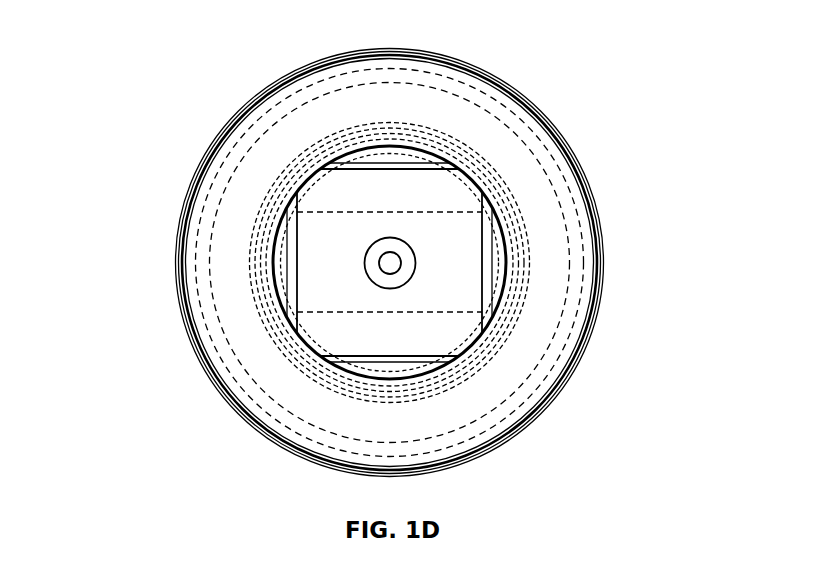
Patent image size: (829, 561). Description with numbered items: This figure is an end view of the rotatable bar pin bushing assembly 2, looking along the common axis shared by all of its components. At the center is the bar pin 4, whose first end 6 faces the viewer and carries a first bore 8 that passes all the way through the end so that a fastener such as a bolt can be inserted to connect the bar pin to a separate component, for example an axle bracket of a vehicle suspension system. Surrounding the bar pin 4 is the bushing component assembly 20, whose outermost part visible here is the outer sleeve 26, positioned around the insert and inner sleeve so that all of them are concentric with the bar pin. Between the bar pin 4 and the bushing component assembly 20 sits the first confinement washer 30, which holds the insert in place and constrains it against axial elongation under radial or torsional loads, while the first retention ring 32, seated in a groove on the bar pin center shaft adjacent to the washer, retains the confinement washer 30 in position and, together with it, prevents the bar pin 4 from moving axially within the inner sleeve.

The rotatable bar pin bushing assembly 2 is at (126, 42).
The bar pin 4 is at (366, 156).
The first end 6 is at (458, 184).
The first bore 8 is at (470, 272).
The bushing component assembly 20 is at (170, 298).
The outer sleeve 26 is at (181, 232).
The first confinement washer 30 is at (510, 380).
The first retention ring 32 is at (508, 312).